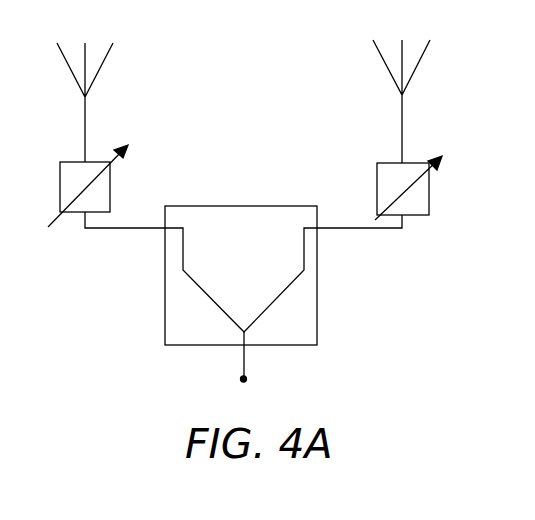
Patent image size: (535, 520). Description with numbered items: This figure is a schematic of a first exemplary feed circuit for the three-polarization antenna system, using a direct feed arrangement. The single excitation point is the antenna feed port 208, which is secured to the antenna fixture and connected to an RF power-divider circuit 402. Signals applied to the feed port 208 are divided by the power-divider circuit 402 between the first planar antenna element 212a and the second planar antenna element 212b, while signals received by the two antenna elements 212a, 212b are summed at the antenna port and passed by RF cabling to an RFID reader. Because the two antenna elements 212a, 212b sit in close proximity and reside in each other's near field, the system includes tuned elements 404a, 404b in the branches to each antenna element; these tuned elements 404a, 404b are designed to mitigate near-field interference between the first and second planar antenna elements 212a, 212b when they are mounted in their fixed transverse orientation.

The first planar antenna element 212a is at (85, 108).
The second planar antenna element 212b is at (402, 120).
The tuned element 404a is at (110, 188).
The tuned element 404b is at (429, 193).
The RF power-divider circuit 402 is at (317, 320).
The antenna feed port 208 is at (245, 365).